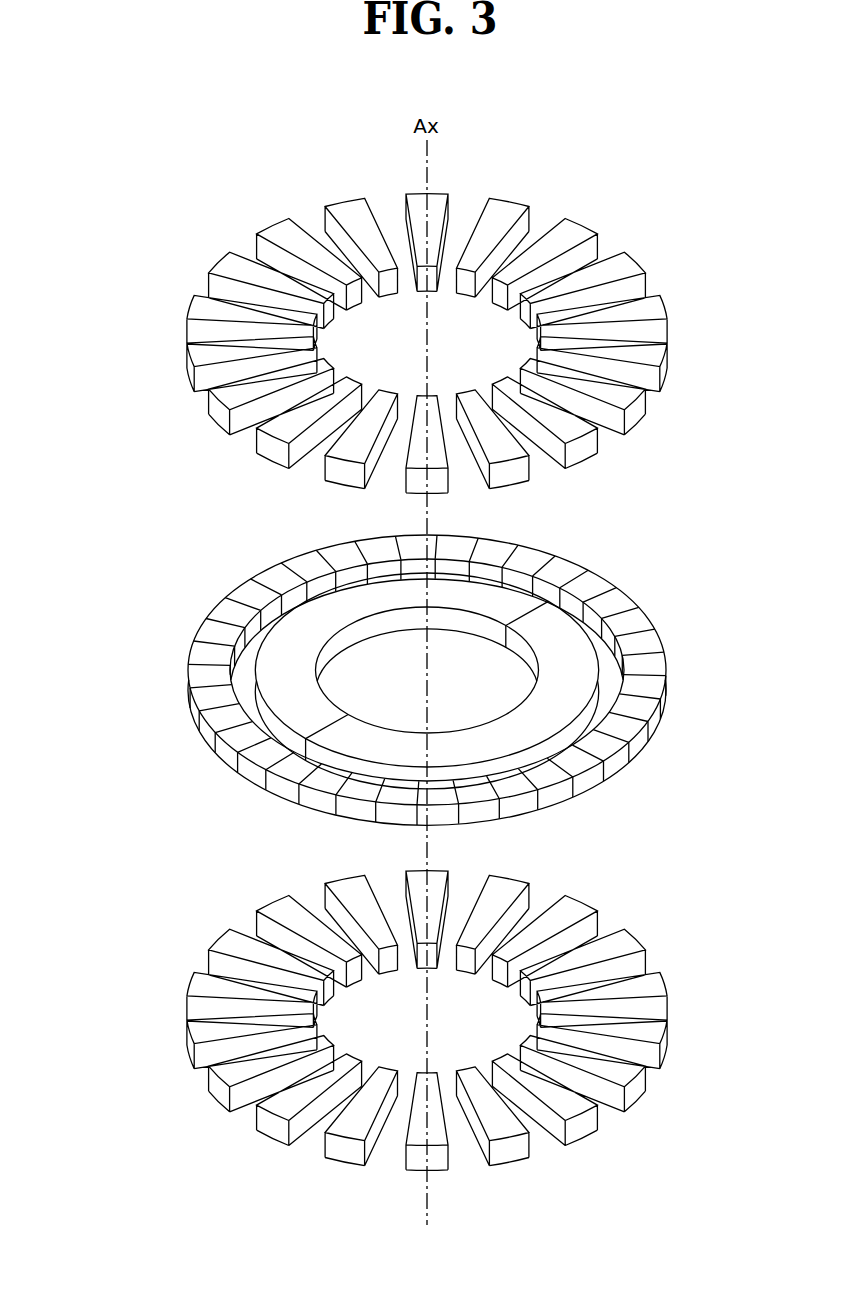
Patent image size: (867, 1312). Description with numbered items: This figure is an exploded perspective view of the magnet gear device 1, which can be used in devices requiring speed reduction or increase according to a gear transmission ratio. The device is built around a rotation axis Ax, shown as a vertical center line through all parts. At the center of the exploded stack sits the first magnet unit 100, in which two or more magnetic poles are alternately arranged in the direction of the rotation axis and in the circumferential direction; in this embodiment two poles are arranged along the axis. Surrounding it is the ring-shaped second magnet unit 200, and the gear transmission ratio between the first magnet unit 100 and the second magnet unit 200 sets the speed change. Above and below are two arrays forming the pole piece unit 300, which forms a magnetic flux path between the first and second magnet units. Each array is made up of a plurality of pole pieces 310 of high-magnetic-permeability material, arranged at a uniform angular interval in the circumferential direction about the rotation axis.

The magnet gear device 1 is at (703, 159).
The first magnet unit 100 is at (601, 628).
The second magnet unit 200 is at (683, 685).
The pole piece unit 300 is at (683, 358).
The pole pieces 310 is at (226, 414).